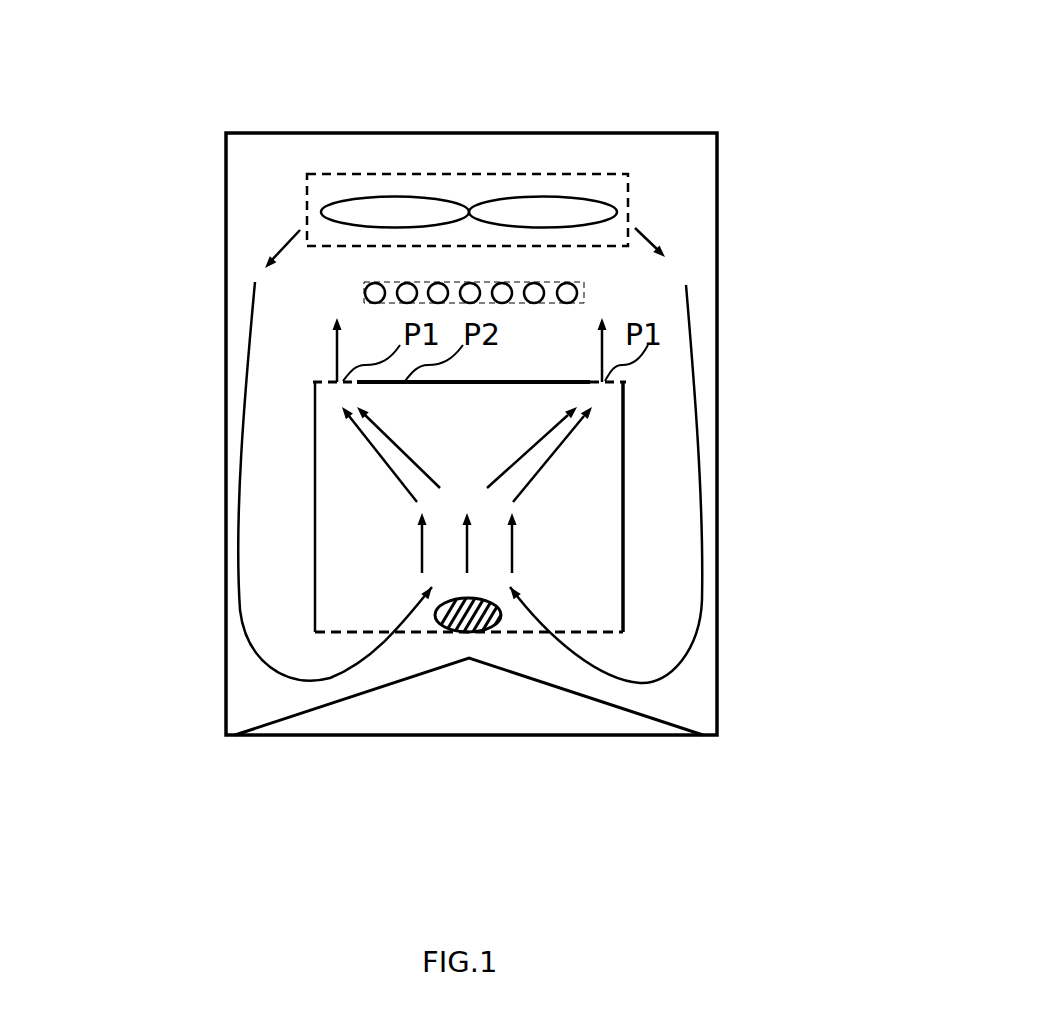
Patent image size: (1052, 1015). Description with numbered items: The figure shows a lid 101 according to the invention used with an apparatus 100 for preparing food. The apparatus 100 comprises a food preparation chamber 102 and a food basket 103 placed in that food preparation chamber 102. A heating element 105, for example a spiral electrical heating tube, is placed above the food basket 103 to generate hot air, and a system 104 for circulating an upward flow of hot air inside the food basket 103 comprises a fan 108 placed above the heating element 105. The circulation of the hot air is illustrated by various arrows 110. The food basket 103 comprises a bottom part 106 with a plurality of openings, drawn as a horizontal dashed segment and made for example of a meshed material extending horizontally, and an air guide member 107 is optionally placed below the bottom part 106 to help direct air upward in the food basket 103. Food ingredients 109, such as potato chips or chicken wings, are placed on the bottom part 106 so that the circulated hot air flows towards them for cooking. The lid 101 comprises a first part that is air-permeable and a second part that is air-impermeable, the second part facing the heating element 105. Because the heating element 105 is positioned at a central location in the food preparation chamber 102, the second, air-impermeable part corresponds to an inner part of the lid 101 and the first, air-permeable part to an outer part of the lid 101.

The apparatus 100 is at (180, 108).
The lid 101 is at (483, 381).
The food preparation chamber 102 is at (650, 422).
The food basket 103 is at (623, 490).
The system for circulating an upward flow of hot air 104 is at (628, 185).
The heating element 105 is at (577, 295).
The bottom part 106 is at (587, 632).
The air guide member 107 is at (633, 717).
The fan 108 is at (417, 198).
The food ingredients 109 is at (489, 602).
The arrows 110 is at (365, 447).